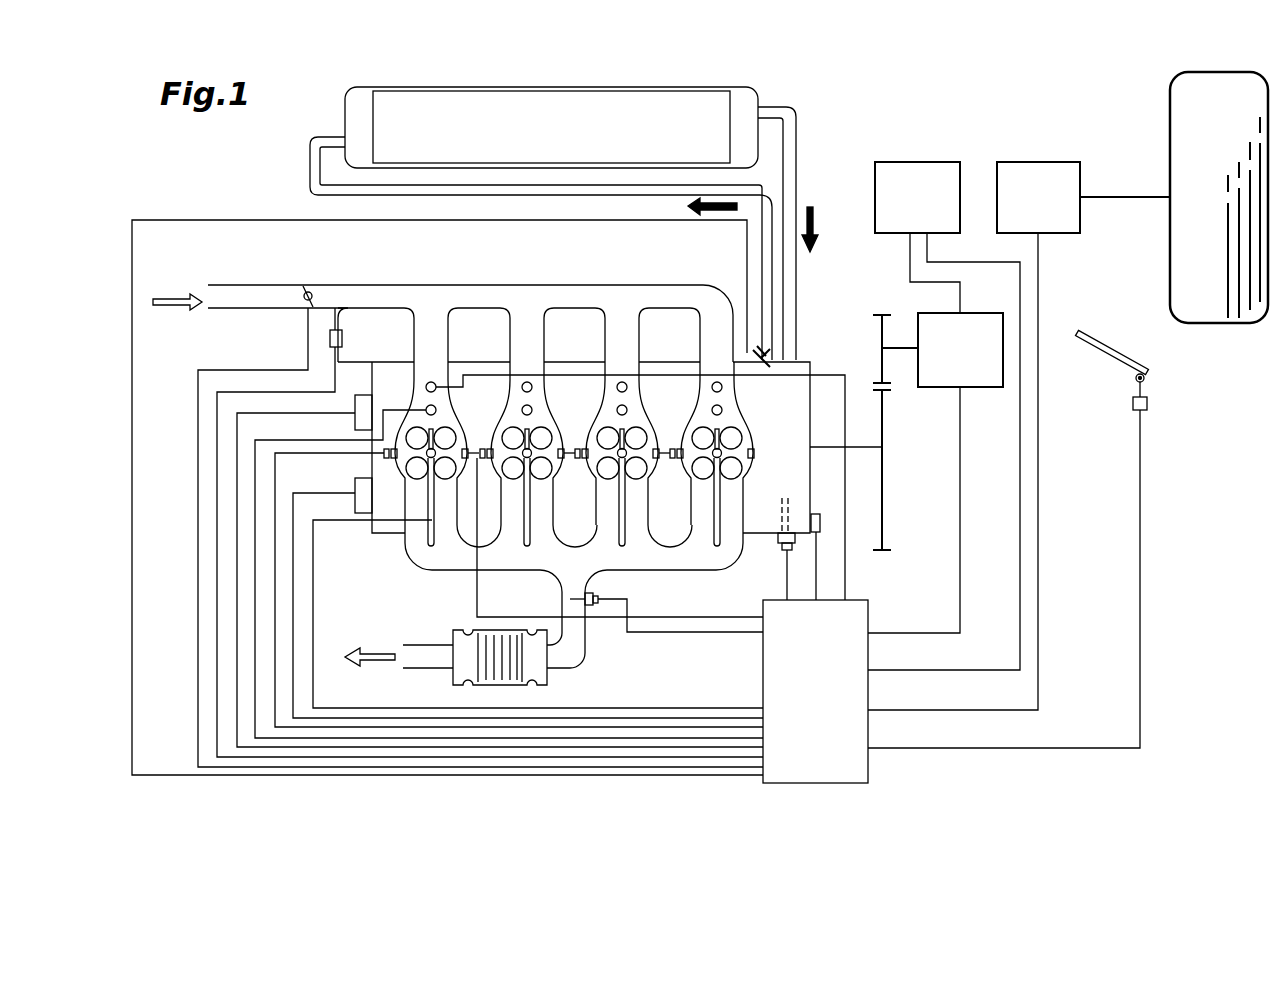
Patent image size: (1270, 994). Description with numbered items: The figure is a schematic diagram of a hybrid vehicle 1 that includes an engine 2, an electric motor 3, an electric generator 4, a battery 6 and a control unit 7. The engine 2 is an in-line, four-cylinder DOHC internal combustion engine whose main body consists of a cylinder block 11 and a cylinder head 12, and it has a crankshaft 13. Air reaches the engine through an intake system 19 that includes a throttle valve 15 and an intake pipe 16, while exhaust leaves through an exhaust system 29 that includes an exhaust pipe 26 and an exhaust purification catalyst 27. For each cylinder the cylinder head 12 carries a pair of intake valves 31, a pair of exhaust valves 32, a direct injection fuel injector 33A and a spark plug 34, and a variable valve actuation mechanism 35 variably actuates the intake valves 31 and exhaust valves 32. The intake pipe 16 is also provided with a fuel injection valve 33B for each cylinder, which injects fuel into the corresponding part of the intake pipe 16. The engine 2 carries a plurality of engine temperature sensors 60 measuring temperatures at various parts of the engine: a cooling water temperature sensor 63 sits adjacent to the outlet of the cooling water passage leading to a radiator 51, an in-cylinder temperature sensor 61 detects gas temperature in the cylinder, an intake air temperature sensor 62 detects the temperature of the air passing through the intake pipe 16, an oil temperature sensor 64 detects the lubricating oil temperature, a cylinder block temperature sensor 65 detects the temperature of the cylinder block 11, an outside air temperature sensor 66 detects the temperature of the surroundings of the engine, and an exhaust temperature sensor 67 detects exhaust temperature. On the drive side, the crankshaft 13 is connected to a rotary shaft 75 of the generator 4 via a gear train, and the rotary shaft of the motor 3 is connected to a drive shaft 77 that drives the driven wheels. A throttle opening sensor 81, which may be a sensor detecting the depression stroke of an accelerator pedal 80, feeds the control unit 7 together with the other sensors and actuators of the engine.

The hybrid vehicle 1 is at (1063, 76).
The engine 2 is at (568, 596).
The electric motor 3 is at (1047, 160).
The electric generator 4 is at (980, 390).
The battery 6 is at (933, 160).
The control unit 7 is at (845, 790).
The cylinder block 11 is at (803, 360).
The cylinder head 12 is at (812, 416).
The crankshaft 13 is at (862, 450).
The throttle valve 15 is at (310, 292).
The intake pipe 16 is at (587, 286).
The intake system 19 is at (630, 280).
The exhaust pipe 26 is at (697, 573).
The exhaust purification catalyst 27 is at (549, 671).
The exhaust system 29 is at (629, 581).
The intake valves 31 is at (516, 430).
The exhaust valves 32 is at (516, 476).
The direct injection fuel injector 33A is at (386, 456).
The fuel injection valve 33B is at (427, 408).
The spark plug 34 is at (434, 427).
The variable valve actuation mechanism 35 is at (362, 395).
The radiator 51 is at (653, 89).
The engine temperature sensors 60 is at (780, 345).
The in-cylinder temperature sensor 61 is at (472, 449).
The intake air temperature sensor 62 is at (436, 384).
The cooling water temperature sensor 63 is at (758, 353).
The oil temperature sensor 64 is at (778, 538).
The cylinder block temperature sensor 65 is at (816, 513).
The outside air temperature sensor 66 is at (336, 328).
The exhaust temperature sensor 67 is at (597, 606).
The rotary shaft 75 is at (895, 352).
The drive shaft 77 is at (1126, 193).
The accelerator pedal 80 is at (1113, 342).
The throttle opening sensor 81 is at (1148, 404).